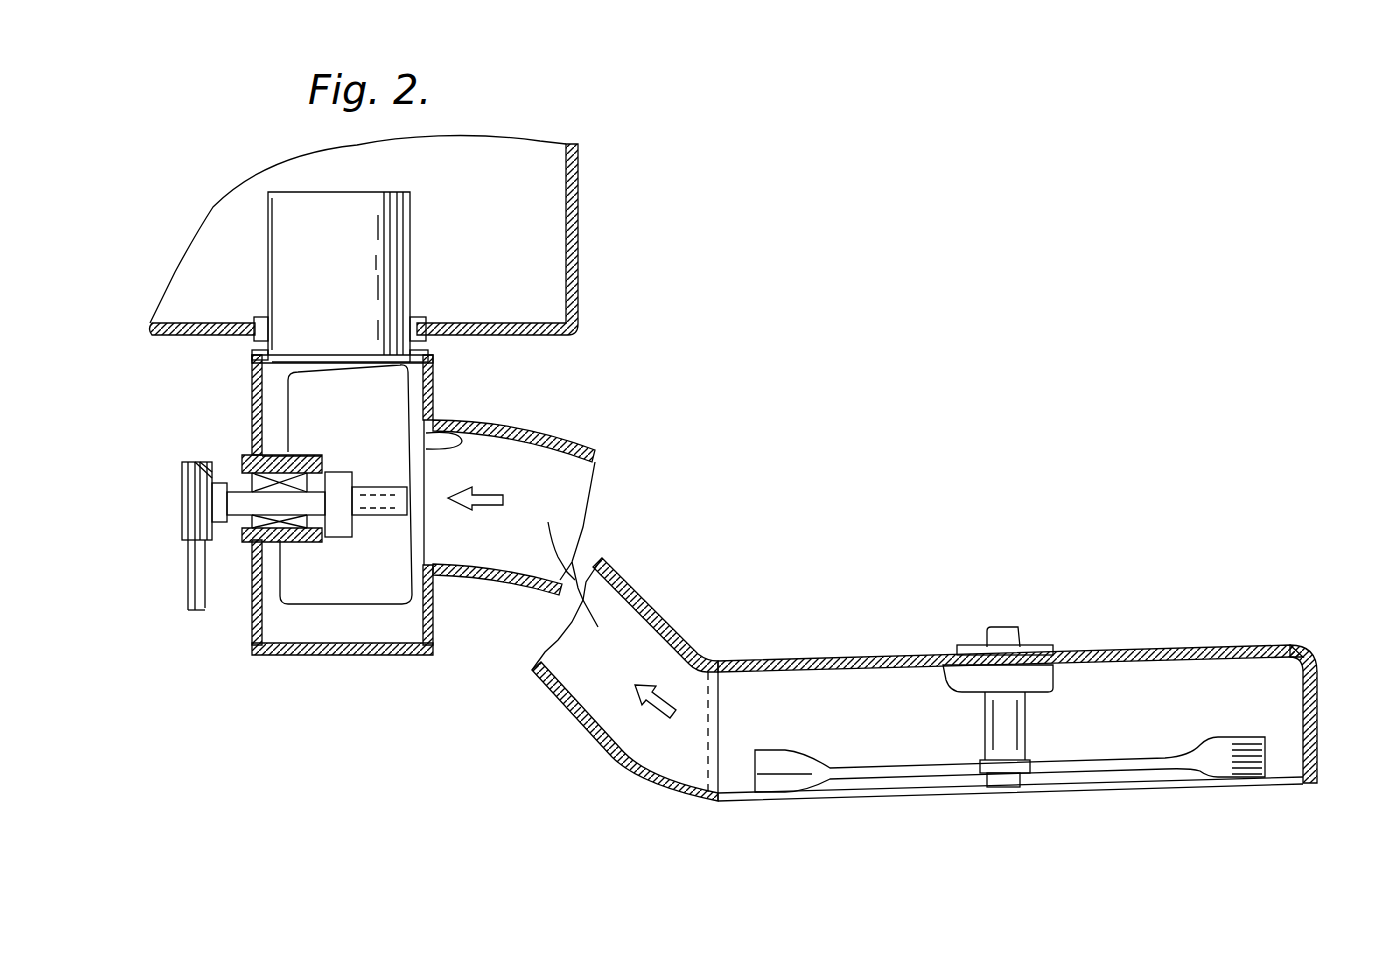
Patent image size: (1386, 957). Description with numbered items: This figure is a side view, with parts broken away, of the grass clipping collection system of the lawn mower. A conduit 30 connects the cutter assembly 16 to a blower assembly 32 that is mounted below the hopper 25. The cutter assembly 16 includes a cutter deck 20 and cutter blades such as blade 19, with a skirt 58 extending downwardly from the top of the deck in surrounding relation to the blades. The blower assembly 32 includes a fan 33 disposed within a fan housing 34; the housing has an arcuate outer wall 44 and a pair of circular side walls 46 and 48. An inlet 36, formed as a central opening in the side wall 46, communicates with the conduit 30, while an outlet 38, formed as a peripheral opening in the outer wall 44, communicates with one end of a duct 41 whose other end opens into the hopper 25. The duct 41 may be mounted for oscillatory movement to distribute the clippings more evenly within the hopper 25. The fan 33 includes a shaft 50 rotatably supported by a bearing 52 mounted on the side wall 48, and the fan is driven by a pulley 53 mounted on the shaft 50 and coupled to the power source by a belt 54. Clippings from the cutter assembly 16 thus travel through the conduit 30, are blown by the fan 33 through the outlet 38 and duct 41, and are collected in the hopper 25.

The cutter assembly 16 is at (895, 651).
The cutter blade 19 is at (886, 768).
The cutter deck 20 is at (777, 660).
The hopper 25 is at (576, 150).
The conduit 30 is at (593, 440).
The blower assembly 32 is at (323, 661).
The fan 33 is at (373, 550).
The fan housing 34 is at (252, 632).
The inlet 36 is at (487, 427).
The outlet 38 is at (358, 357).
The duct 41 is at (382, 236).
The arcuate outer wall 44 is at (418, 655).
The side wall 46 is at (440, 606).
The side wall 48 is at (251, 404).
The shaft 50 is at (302, 478).
The bearing 52 is at (286, 521).
The pulley 53 is at (182, 470).
The belt 54 is at (187, 564).
The skirt 58 is at (1317, 730).